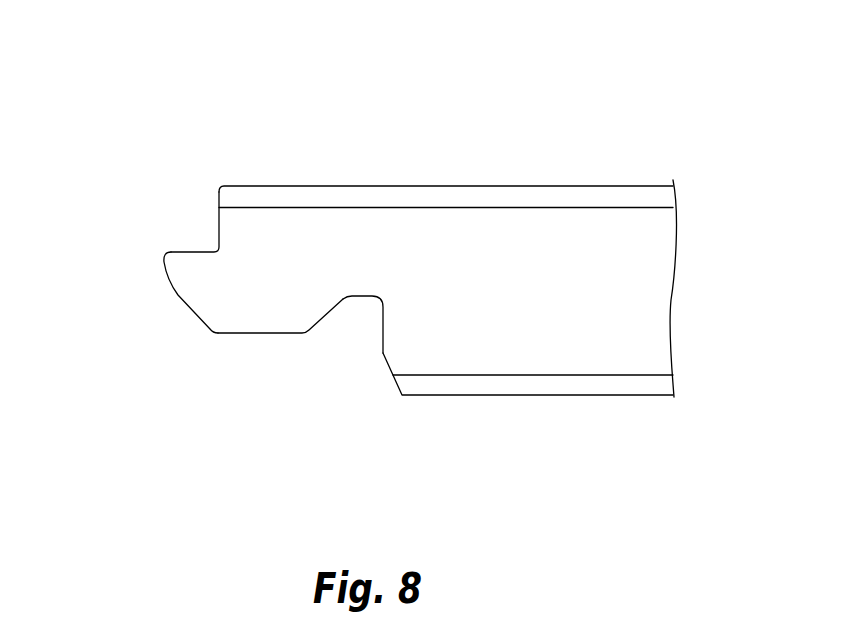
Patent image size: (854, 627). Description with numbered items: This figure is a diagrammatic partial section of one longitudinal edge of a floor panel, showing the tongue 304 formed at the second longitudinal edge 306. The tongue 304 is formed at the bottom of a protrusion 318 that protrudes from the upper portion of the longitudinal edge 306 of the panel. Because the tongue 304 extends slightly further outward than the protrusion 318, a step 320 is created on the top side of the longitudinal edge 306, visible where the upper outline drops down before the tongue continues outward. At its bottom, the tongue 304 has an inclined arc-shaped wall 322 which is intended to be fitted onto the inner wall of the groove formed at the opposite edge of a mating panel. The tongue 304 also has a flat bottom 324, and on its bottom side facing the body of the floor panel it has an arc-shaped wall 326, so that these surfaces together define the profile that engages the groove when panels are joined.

The protrusion 318 is at (288, 245).
The step 320 is at (186, 214).
The inclined arc-shaped wall 322 is at (175, 290).
The flat bottom 324 is at (263, 333).
The arc-shaped wall 326 is at (328, 318).
The tongue 304 is at (296, 357).
The longitudinal edge 306 is at (149, 389).